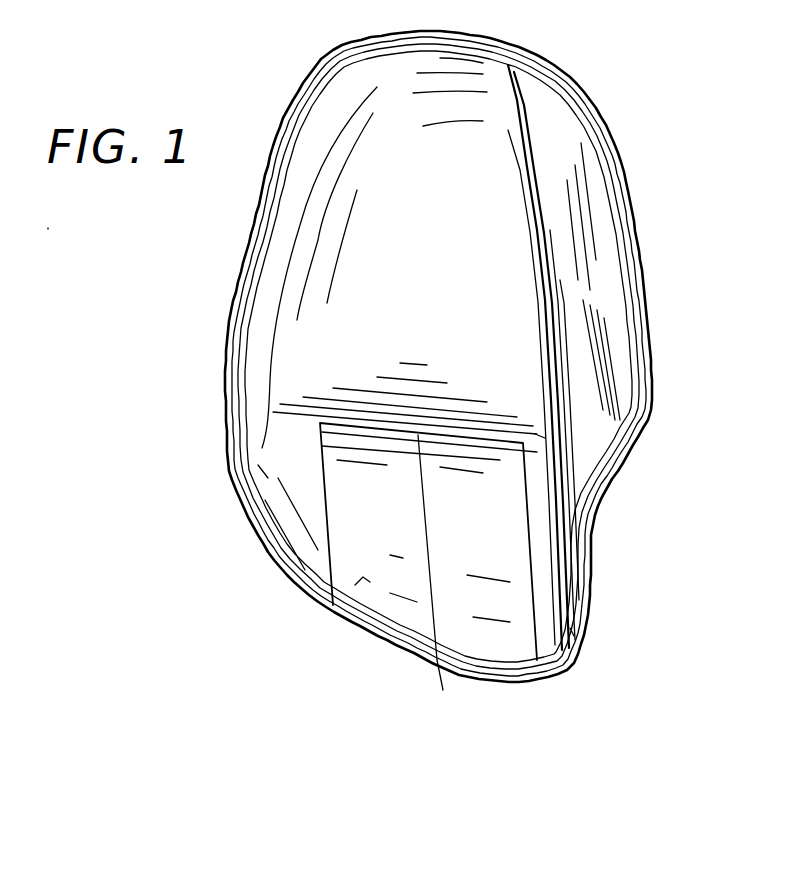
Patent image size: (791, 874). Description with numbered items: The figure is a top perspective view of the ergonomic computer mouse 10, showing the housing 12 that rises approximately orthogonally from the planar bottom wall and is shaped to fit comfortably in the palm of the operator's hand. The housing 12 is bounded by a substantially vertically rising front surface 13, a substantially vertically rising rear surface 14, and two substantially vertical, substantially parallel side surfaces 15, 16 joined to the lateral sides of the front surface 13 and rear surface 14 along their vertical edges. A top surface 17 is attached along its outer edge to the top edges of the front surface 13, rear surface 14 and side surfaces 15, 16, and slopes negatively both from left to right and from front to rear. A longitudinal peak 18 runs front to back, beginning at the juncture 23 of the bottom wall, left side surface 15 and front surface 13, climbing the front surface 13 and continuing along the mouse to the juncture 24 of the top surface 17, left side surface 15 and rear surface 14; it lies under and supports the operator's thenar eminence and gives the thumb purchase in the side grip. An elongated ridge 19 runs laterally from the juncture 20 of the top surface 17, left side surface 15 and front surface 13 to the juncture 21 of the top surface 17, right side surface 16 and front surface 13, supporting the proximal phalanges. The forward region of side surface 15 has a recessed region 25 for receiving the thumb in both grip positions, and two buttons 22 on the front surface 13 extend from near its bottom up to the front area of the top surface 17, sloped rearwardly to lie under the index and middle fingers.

The ergonomic computer mouse 10 is at (102, 243).
The housing 12 is at (270, 155).
The front surface 13 is at (443, 690).
The rear surface 14 is at (405, 35).
The side surface 15 is at (635, 252).
The side surface 16 is at (257, 258).
The top surface 17 is at (400, 188).
The peak 18 is at (567, 358).
The elongated ridge 19 is at (408, 408).
The juncture 20 is at (545, 437).
The juncture 21 is at (293, 427).
The buttons 22 is at (363, 577).
The juncture 23 is at (570, 628).
The juncture 24 is at (540, 123).
The recessed region 25 is at (607, 480).